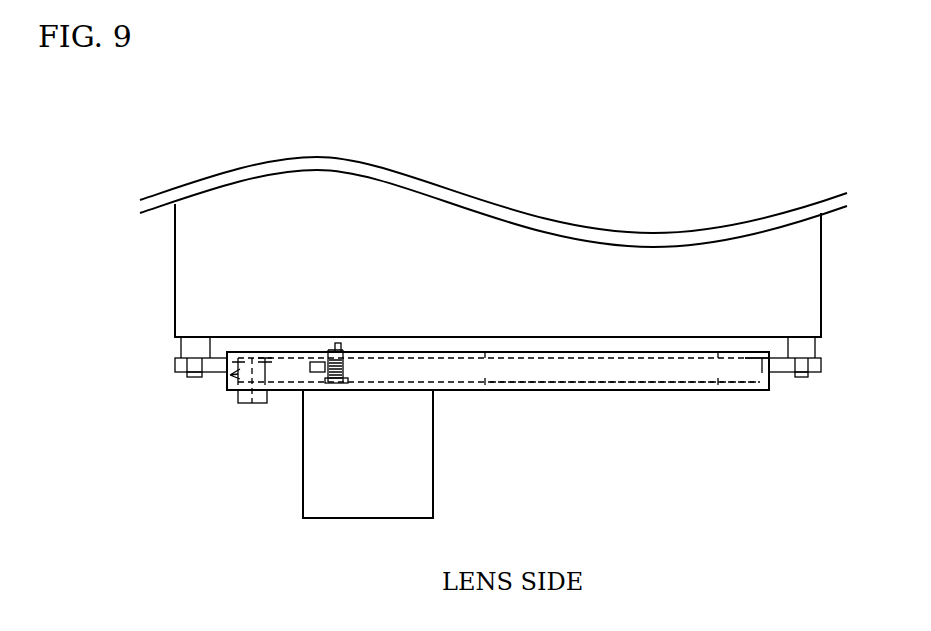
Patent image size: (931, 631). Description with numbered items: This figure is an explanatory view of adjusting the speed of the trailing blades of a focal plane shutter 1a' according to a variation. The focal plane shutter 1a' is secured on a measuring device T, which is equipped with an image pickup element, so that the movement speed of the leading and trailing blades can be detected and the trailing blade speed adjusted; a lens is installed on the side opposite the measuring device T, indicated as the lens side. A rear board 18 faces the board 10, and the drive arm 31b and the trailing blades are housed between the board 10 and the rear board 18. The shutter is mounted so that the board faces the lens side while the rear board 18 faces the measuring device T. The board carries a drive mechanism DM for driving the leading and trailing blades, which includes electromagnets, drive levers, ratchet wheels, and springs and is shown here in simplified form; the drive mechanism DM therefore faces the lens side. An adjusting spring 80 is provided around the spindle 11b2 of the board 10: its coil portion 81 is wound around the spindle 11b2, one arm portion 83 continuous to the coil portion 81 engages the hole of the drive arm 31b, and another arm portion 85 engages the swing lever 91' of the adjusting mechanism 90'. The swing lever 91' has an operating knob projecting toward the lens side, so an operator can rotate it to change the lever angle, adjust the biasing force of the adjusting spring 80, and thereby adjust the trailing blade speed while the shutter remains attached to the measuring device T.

The measuring device T is at (188, 265).
The board 10 is at (727, 390).
The rear board 18 is at (738, 352).
The spindle 11b2 is at (340, 352).
The swing lever 91' is at (243, 424).
The adjusting mechanism 90' is at (193, 411).
The adjusting spring 80 is at (350, 356).
The arm portion 83 is at (385, 385).
The coil portion 81 is at (330, 385).
The arm portion 85 is at (313, 372).
The drive arm 31b is at (517, 390).
The focal plane shutter 1a' is at (629, 438).
The drive mechanism DM is at (343, 507).